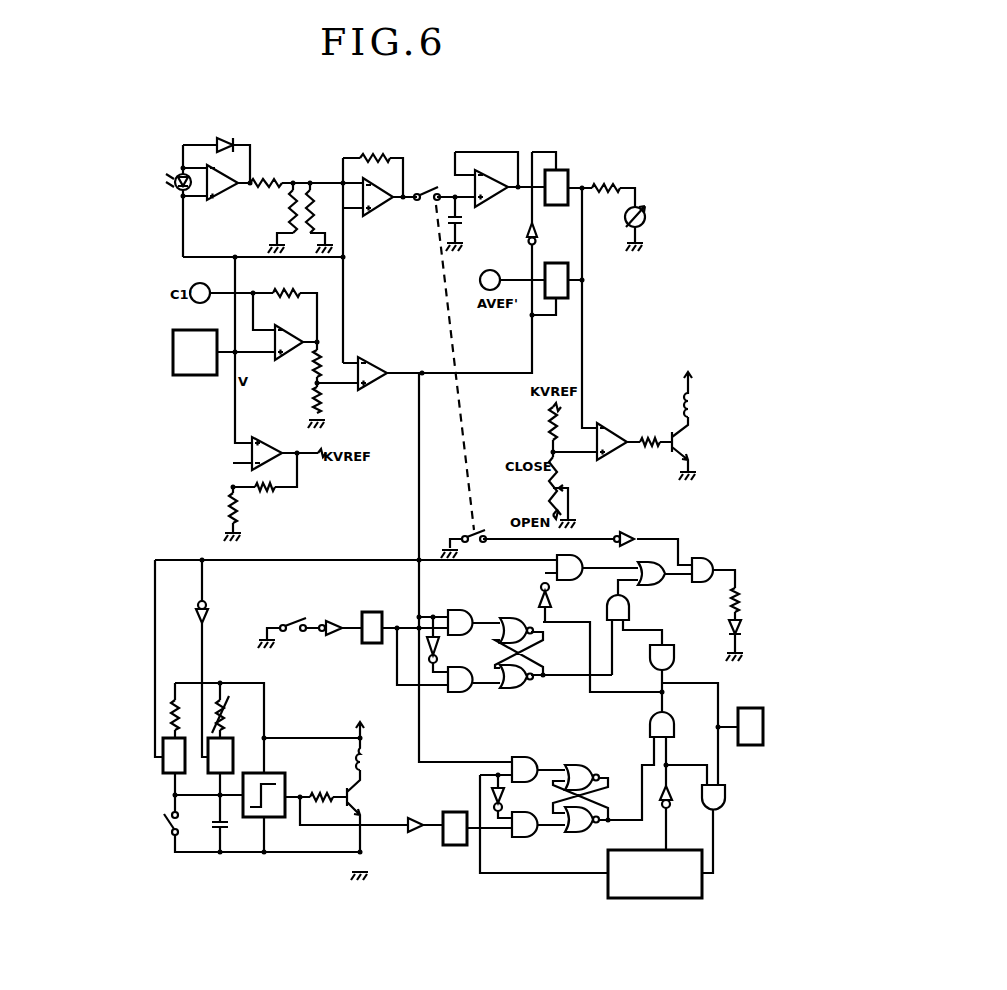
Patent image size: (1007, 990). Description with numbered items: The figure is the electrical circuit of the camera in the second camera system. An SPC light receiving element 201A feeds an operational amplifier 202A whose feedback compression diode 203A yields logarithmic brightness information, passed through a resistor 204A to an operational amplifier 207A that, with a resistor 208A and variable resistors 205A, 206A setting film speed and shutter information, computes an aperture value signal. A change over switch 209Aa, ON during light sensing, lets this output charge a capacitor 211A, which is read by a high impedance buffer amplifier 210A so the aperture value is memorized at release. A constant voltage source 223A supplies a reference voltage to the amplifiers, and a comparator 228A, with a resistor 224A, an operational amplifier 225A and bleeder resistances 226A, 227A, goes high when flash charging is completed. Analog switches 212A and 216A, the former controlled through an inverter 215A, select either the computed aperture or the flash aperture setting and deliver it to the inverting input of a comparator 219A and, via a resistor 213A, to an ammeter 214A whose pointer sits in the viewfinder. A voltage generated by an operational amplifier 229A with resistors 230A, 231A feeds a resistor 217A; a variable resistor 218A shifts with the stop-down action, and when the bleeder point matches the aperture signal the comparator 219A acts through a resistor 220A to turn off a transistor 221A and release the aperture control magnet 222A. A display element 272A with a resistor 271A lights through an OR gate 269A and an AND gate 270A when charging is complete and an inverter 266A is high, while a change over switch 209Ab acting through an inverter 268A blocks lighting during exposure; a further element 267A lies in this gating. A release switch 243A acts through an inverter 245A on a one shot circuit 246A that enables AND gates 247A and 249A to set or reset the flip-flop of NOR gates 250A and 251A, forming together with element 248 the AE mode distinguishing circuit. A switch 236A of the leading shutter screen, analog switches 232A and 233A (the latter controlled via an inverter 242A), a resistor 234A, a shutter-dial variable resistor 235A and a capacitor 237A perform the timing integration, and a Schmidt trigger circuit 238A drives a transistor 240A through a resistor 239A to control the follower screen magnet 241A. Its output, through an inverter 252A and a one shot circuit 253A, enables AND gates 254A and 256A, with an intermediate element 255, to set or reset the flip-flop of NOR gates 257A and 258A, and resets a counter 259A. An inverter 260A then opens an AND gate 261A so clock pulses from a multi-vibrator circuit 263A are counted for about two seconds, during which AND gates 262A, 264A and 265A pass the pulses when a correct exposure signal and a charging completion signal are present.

The SPC light receiving element 201A is at (177, 189).
The operational amplifier 202A is at (223, 207).
The compression diode 203A is at (225, 138).
The resistor 204A is at (265, 178).
The variable resistor 205A is at (290, 215).
The variable resistor 206A is at (312, 192).
The operational amplifier 207A is at (381, 211).
The resistor 208A is at (373, 156).
The change over switch 209Aa is at (432, 188).
The change over switch 209Ab is at (464, 537).
The operational amplifier 210A is at (492, 183).
The capacitor 211A is at (464, 220).
The analog switch 212A is at (562, 170).
The resistor 213A is at (612, 185).
The ammeter 214A is at (648, 216).
The inverter 215A is at (528, 234).
The analog switch 216A is at (570, 273).
The resistor 217A is at (550, 428).
The variable resistor 218A is at (548, 482).
The comparator 219A is at (610, 422).
The resistor 220A is at (649, 438).
The transistor 221A is at (690, 441).
The aperture control magnet 222A is at (692, 404).
The constant voltage source 223A is at (196, 378).
The resistor 224A is at (282, 292).
The operational amplifier 225A is at (300, 340).
The bleeder resistance 226A is at (318, 353).
The bleeder resistance 227A is at (314, 404).
The comparator 228A is at (375, 360).
The operational amplifier 229A is at (250, 450).
The resistor 230A is at (265, 490).
The resistor 231A is at (228, 506).
The analog switch 232A is at (162, 757).
The analog switch 233A is at (239, 752).
The resistor 234A is at (173, 702).
The variable resistor 235A is at (245, 678).
The change over switch 236A is at (165, 820).
The capacitor 237A is at (216, 830).
The Schmidt trigger circuit 238A is at (270, 773).
The resistor 239A is at (328, 792).
The transistor 240A is at (355, 800).
The magnet 241A is at (363, 748).
The inverter 242A is at (209, 608).
The change over switch 243A is at (286, 621).
The inverter 245A is at (344, 626).
The one shot circuit 246A is at (372, 612).
The AND gate 247A is at (455, 610).
The inverter 248 is at (428, 654).
The AND gate 249A is at (456, 693).
The NOR gate 250A is at (515, 618).
The NOR gate 251A is at (520, 690).
The inverter 252A is at (418, 832).
The one shot circuit 253A is at (453, 812).
The AND gate 254A is at (521, 758).
The inverter 255 is at (498, 810).
The AND gate 256A is at (520, 838).
The NOR gate 257A is at (577, 766).
The NOR gate 258A is at (577, 832).
The counter 259A is at (660, 898).
The inverter 260A is at (672, 799).
The AND gate 261A is at (727, 797).
The AND gate 262A is at (682, 698).
The multi-vibrator circuit 263A is at (752, 680).
The AND gate 264A is at (682, 637).
The AND gate 265A is at (629, 610).
The inverter 266A is at (551, 595).
The AND gate 267A is at (578, 557).
The inverter 268A is at (635, 540).
The OR gate 269A is at (667, 566).
The AND gate 270A is at (715, 566).
The resistor 271A is at (742, 599).
The display element 272A is at (742, 626).